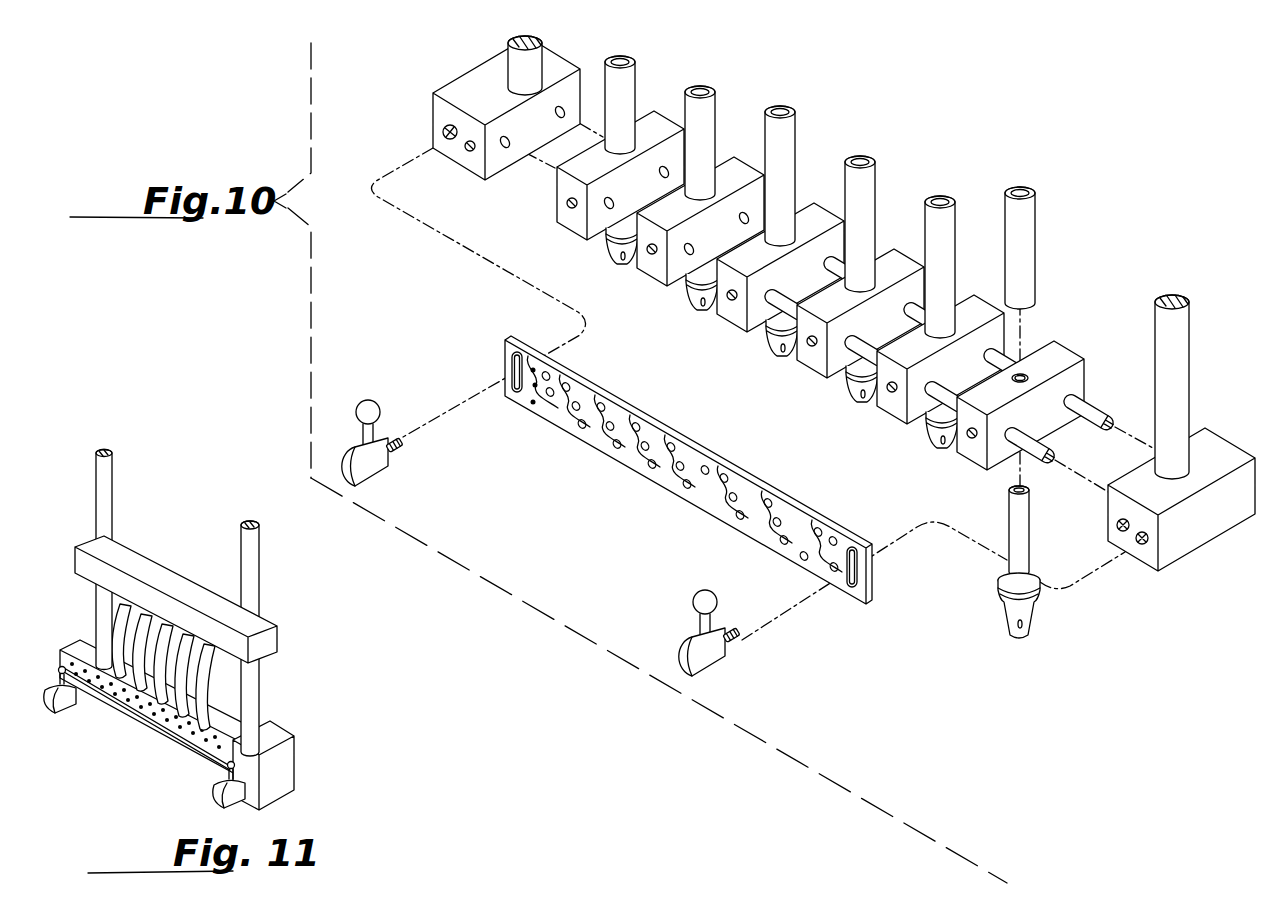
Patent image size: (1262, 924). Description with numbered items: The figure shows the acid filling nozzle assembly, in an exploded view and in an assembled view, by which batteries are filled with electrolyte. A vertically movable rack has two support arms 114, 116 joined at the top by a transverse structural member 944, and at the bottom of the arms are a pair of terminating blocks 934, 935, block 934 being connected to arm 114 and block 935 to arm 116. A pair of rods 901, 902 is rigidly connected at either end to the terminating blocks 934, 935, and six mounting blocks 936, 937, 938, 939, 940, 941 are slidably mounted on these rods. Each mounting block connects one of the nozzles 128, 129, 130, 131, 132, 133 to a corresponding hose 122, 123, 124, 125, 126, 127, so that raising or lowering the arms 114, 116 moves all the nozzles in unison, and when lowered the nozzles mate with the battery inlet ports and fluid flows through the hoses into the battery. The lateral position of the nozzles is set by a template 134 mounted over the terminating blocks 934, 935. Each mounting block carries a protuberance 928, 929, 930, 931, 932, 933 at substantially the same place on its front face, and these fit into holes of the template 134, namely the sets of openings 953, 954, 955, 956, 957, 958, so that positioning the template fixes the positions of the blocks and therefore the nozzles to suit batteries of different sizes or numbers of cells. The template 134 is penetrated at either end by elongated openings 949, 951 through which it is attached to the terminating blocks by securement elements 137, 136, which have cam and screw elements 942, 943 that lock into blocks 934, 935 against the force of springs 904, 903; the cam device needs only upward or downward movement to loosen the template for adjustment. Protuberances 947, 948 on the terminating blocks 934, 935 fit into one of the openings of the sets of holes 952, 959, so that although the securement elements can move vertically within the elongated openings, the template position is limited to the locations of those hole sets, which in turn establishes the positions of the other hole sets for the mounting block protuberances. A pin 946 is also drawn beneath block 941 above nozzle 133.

In FIG. 10, the arm 114 is at (517, 66).
In FIG. 11, the arm 114 is at (108, 473).
In FIG. 10, the arm 116 is at (1180, 318).
In FIG. 11, the arm 116 is at (253, 560).
In FIG. 10, the hose 122 is at (627, 83).
In FIG. 10, the hose 123 is at (710, 112).
In FIG. 10, the hose 124 is at (787, 140).
In FIG. 10, the hose 125 is at (872, 187).
In FIG. 10, the hose 126 is at (950, 217).
In FIG. 10, the hose 127 is at (1028, 218).
In FIG. 10, the nozzle 128 is at (610, 247).
In FIG. 10, the nozzle 129 is at (697, 297).
In FIG. 10, the nozzle 130 is at (775, 347).
In FIG. 10, the nozzle 131 is at (850, 399).
In FIG. 10, the nozzle 132 is at (937, 441).
In FIG. 10, the nozzle 133 is at (1032, 620).
In FIG. 10, the template 134 is at (677, 490).
In FIG. 11, the template 134 is at (84, 664).
In FIG. 10, the securement element 136 is at (712, 661).
In FIG. 11, the securement element 136 is at (235, 806).
In FIG. 10, the securement element 137 is at (380, 467).
In FIG. 11, the securement element 137 is at (64, 712).
In FIG. 10, the rod 901 is at (1022, 437).
In FIG. 10, the rod 902 is at (1087, 403).
In FIG. 10, the spring 903 is at (1139, 547).
In FIG. 10, the spring 904 is at (443, 130).
In FIG. 10, the protuberance 928 is at (566, 203).
In FIG. 10, the protuberance 929 is at (648, 260).
In FIG. 10, the protuberance 930 is at (728, 304).
In FIG. 10, the protuberance 931 is at (806, 352).
In FIG. 10, the protuberance 932 is at (888, 395).
In FIG. 10, the protuberance 933 is at (973, 443).
In FIG. 10, the terminating block 934 is at (472, 85).
In FIG. 10, the terminating block 935 is at (1187, 537).
In FIG. 11, the terminating block 935 is at (285, 771).
In FIG. 10, the mounting block 936 is at (657, 123).
In FIG. 10, the mounting block 937 is at (740, 170).
In FIG. 10, the mounting block 938 is at (817, 215).
In FIG. 10, the mounting block 939 is at (893, 253).
In FIG. 10, the mounting block 940 is at (970, 307).
In FIG. 10, the mounting block 941 is at (1057, 357).
In FIG. 10, the cam and screw element 942 is at (398, 434).
In FIG. 10, the cam and screw element 943 is at (742, 644).
In FIG. 11, the transverse structural member 944 is at (147, 563).
In FIG. 10, the pin 946 is at (1015, 538).
In FIG. 10, the protuberance 947 is at (468, 153).
In FIG. 10, the protuberance 948 is at (1117, 522).
In FIG. 10, the elongated opening 949 is at (513, 365).
In FIG. 10, the elongated opening 951 is at (864, 580).
In FIG. 10, the set of holes 952 is at (527, 400).
In FIG. 10, the set of openings 953 is at (557, 422).
In FIG. 10, the set of openings 954 is at (598, 447).
In FIG. 10, the set of openings 955 is at (637, 468).
In FIG. 10, the set of openings 956 is at (672, 489).
In FIG. 10, the set of openings 957 is at (732, 529).
In FIG. 10, the set of openings 958 is at (782, 546).
In FIG. 10, the set of holes 959 is at (813, 569).